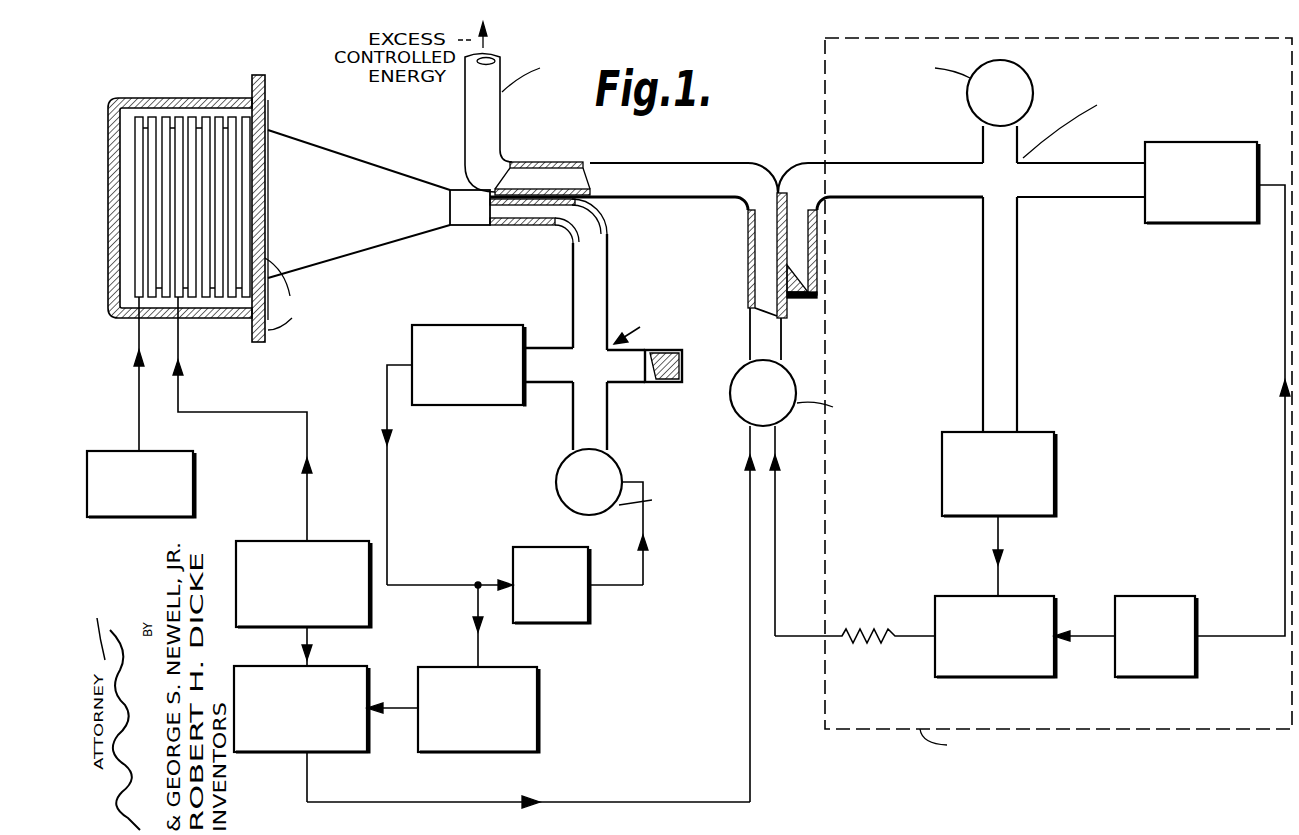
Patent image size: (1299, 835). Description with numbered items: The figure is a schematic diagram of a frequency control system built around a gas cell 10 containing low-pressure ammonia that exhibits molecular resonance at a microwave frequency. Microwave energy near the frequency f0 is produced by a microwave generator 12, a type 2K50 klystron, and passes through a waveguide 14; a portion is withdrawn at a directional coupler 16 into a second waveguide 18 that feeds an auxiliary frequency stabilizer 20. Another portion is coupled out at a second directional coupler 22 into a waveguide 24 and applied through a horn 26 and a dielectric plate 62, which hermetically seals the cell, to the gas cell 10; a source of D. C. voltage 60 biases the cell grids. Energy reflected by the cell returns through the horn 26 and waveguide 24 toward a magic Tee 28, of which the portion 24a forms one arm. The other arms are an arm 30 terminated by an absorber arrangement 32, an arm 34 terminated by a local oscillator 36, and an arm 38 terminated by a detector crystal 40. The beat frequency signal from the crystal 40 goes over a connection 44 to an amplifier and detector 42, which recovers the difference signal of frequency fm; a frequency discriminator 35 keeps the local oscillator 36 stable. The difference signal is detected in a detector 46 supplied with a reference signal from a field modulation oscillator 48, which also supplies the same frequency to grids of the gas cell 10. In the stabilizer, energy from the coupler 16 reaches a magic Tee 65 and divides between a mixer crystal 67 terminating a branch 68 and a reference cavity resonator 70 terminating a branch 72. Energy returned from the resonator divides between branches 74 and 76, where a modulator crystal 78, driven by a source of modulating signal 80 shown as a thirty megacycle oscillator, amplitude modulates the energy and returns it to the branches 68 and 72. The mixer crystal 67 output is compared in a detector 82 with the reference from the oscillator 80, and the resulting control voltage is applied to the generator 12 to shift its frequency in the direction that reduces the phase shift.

The gas cell 10 is at (201, 86).
The microwave generator 12 is at (714, 427).
The waveguide 14 is at (747, 141).
The directional coupler 16 is at (780, 233).
The second waveguide 18 is at (865, 173).
The auxiliary frequency stabilizer 20 is at (1058, 399).
The second directional coupler 22 is at (560, 152).
The waveguide 24 is at (518, 232).
The portion of waveguide 24a is at (608, 262).
The horn 26 is at (366, 152).
The magic Tee 28 is at (632, 322).
The arm 30 is at (617, 386).
The absorber arrangement 32 is at (665, 352).
The arm 34 is at (573, 422).
The frequency discriminator 35 is at (590, 618).
The local oscillator 36 is at (620, 472).
The arm 38 is at (545, 348).
The detector crystal 40 is at (413, 406).
The amplifier and detector 42 is at (540, 665).
The connection 44 is at (388, 568).
The detector 46 is at (367, 667).
The field modulation oscillator 48 is at (276, 541).
The source of D. C. voltage 60 is at (197, 469).
The dielectric plate 62 is at (294, 294).
The magic Tee 65 is at (969, 149).
The mixer crystal 67 is at (942, 432).
The magic Tee branch 68 is at (1020, 267).
The reference cavity resonator 70 is at (1025, 82).
The magic Tee branch 72 is at (1022, 129).
The branch 74 is at (957, 198).
The branch 76 is at (1068, 163).
The modulator crystal 78 is at (1190, 123).
The source of modulating signal 80 is at (1195, 596).
The detector 82 is at (935, 594).